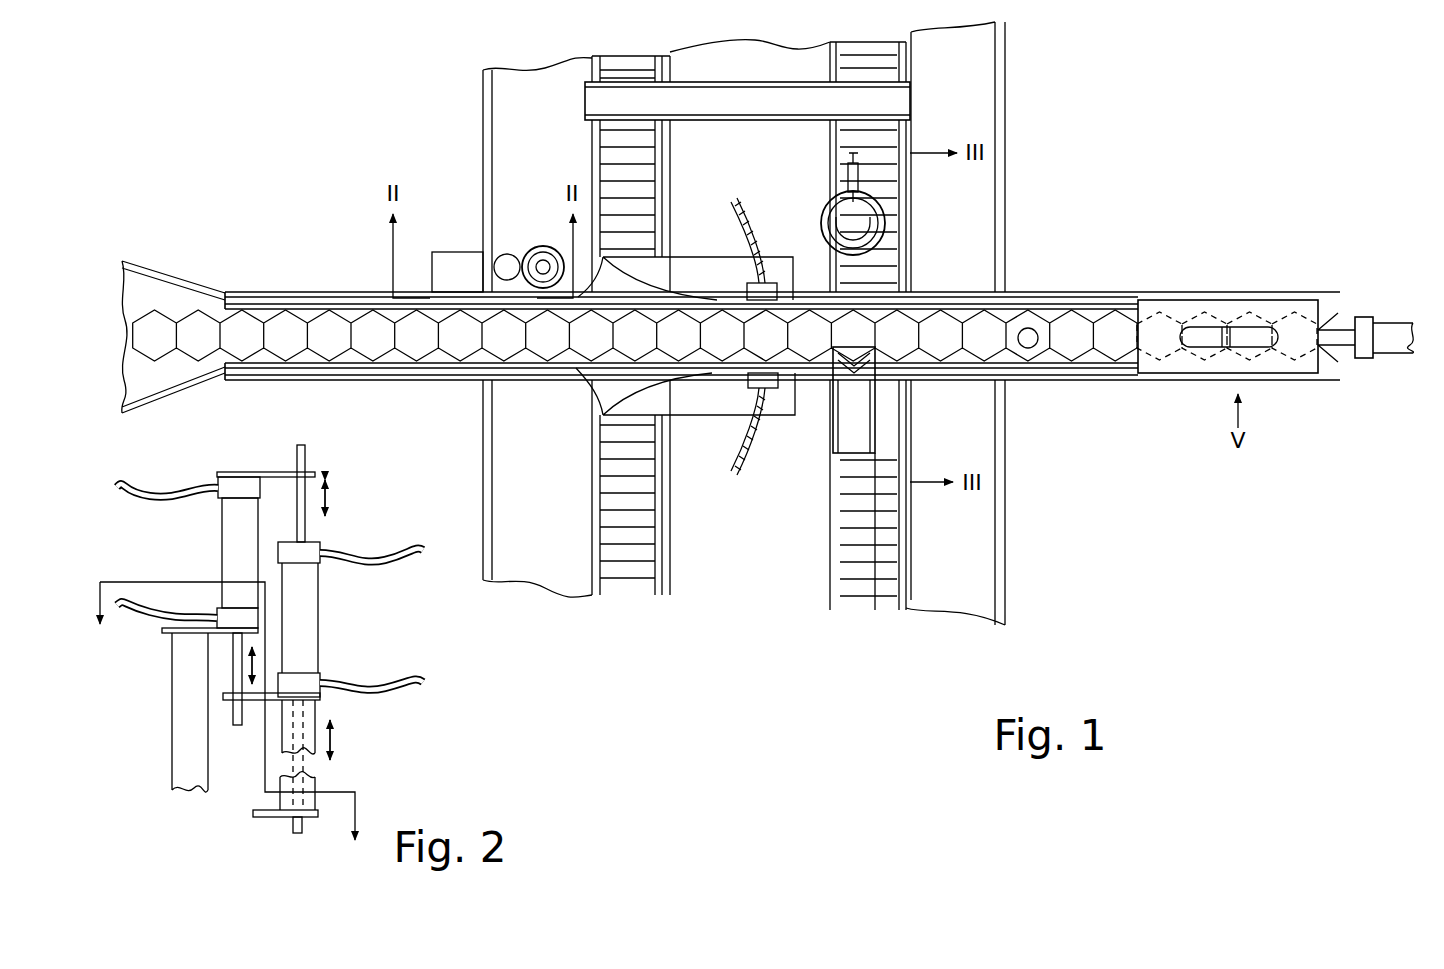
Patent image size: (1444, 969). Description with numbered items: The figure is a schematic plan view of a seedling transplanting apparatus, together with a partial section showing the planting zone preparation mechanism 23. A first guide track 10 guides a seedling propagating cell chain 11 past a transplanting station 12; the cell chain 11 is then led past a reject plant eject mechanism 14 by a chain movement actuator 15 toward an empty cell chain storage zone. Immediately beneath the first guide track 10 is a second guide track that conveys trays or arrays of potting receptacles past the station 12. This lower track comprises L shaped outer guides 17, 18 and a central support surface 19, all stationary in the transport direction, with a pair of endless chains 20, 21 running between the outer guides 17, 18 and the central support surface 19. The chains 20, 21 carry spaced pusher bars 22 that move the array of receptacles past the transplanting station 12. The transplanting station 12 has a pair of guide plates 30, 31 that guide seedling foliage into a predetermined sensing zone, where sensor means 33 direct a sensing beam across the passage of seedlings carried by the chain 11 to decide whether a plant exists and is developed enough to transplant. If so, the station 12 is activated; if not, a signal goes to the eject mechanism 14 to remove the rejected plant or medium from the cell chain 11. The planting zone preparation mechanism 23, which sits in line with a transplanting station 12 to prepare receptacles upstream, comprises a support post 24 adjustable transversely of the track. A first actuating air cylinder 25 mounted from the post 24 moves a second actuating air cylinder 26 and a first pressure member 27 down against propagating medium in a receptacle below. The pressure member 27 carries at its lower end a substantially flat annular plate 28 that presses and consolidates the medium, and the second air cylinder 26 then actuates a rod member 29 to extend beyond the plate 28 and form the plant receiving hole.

In FIG. 1, the first guide track 10 is at (366, 374).
In FIG. 1, the seedling propagating cell chain 11 is at (275, 312).
In FIG. 1, the transplanting station 12 is at (803, 214).
In FIG. 1, the reject plant eject mechanism 14 is at (1031, 347).
In FIG. 1, the chain movement actuator 15 is at (1234, 294).
In FIG. 1, the L shaped outer guide 17 is at (497, 510).
In FIG. 1, the L shaped outer guide 18 is at (967, 535).
In FIG. 1, the central support surface 19 is at (750, 288).
In FIG. 1, the endless chain 20 is at (633, 580).
In FIG. 1, the endless chain 21 is at (863, 605).
In FIG. 1, the pusher bar 22 is at (885, 100).
In FIG. 1, the planting zone preparation mechanism 23 is at (474, 189).
In FIG. 1, the support post 24 is at (448, 268).
In FIG. 2, the support post 24 is at (180, 689).
In FIG. 1, the first actuating air cylinder 25 is at (498, 259).
In FIG. 2, the first actuating air cylinder 25 is at (225, 547).
In FIG. 2, the second actuating air cylinder 26 is at (307, 618).
In FIG. 2, the first pressure member 27 is at (308, 727).
In FIG. 1, the annular plate 28 is at (530, 252).
In FIG. 2, the annular plate 28 is at (308, 817).
In FIG. 1, the rod member 29 is at (542, 262).
In FIG. 2, the rod member 29 is at (292, 832).
In FIG. 1, the guide plate 30 is at (667, 283).
In FIG. 1, the guide plate 31 is at (592, 390).
In FIG. 1, the sensor means 33 is at (755, 287).